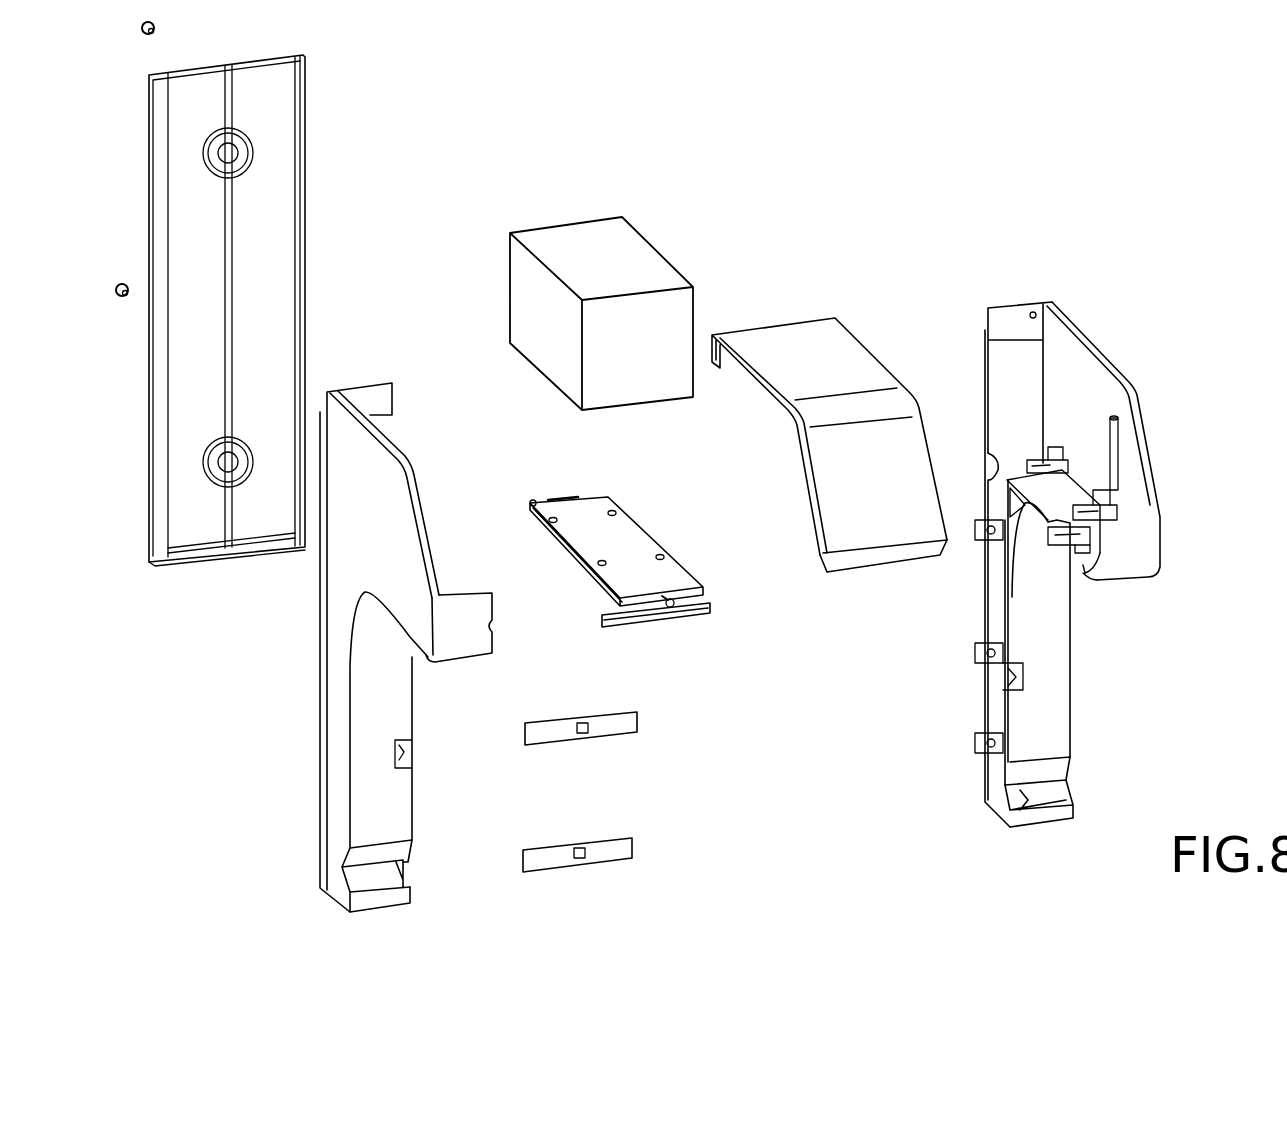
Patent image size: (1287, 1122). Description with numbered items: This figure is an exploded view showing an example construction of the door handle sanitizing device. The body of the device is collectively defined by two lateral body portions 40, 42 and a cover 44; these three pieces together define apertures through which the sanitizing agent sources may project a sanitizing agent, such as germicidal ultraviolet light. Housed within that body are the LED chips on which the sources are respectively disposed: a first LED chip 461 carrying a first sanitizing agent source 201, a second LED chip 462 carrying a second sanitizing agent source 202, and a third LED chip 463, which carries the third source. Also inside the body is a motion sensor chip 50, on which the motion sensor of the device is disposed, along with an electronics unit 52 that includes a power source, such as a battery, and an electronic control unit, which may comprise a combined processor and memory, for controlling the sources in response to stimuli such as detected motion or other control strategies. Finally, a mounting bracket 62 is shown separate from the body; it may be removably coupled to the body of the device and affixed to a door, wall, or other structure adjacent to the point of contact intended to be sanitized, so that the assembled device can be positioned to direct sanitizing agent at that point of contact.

The mounting bracket 62 is at (278, 243).
The lateral body portion 40 is at (406, 647).
The electronics unit 52 is at (601, 313).
The cover 44 is at (815, 335).
The motion sensor chip 50 is at (617, 547).
The lateral body portion 42 is at (1140, 443).
The LED chip 463 is at (712, 606).
The LED chip 462 is at (639, 768).
The LED chip 461 is at (638, 885).
The sanitizing agent source 202 is at (582, 733).
The sanitizing agent source 201 is at (580, 858).